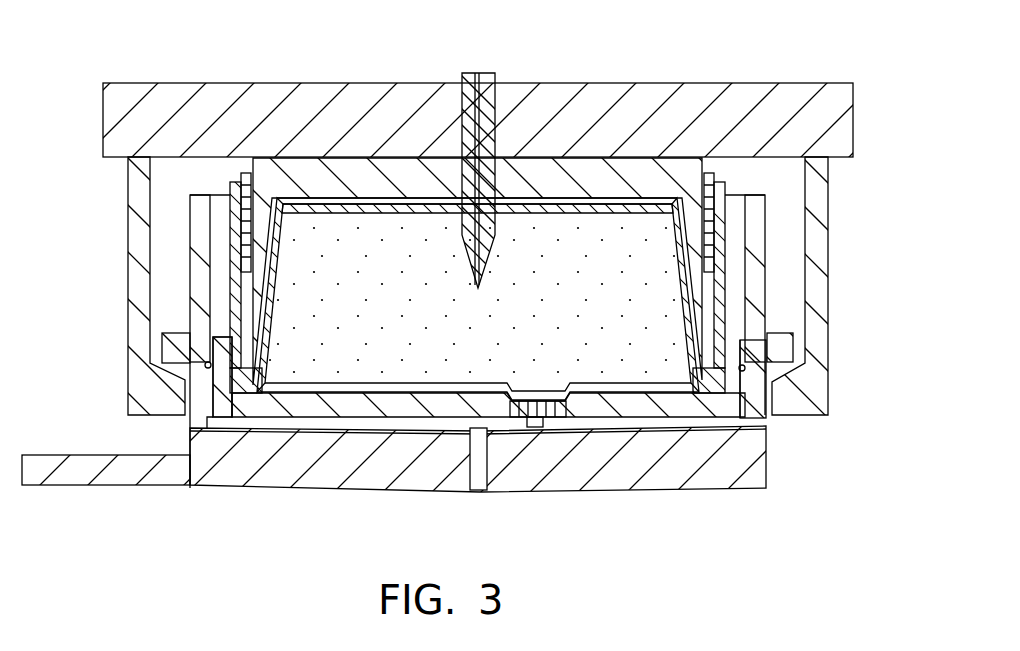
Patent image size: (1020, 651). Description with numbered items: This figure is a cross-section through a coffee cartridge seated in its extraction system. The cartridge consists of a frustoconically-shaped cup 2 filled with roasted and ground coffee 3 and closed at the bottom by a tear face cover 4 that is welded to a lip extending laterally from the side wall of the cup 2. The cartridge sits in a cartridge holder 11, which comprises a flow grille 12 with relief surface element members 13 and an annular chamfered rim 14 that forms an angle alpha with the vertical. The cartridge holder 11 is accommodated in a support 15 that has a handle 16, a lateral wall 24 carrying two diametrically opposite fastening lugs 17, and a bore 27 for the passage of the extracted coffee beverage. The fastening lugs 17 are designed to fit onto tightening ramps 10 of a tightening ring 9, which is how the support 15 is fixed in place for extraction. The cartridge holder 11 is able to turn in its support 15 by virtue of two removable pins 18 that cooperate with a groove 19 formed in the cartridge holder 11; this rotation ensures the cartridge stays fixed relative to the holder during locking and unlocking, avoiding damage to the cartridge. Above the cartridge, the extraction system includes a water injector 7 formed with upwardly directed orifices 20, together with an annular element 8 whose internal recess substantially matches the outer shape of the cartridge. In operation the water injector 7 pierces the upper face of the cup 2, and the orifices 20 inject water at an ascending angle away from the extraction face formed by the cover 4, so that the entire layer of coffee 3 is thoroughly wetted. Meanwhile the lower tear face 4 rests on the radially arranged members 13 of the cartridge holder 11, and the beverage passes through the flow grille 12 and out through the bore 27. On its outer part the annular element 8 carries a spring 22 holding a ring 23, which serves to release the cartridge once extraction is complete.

The cup 2 is at (545, 185).
The roasted and ground coffee 3 is at (452, 326).
The tear face cover 4 is at (385, 383).
The water injector 7 is at (476, 72).
The annular element 8 is at (655, 170).
The tightening ring 9 is at (817, 208).
The tightening ramps 10 is at (797, 413).
The cartridge holder 11 is at (737, 352).
The flow grille 12 is at (533, 422).
The relief surface element members 13 is at (575, 425).
The annular chamfered rim 14 is at (240, 427).
The support 15 is at (665, 470).
The handle 16 is at (52, 475).
The fastening lugs 17 is at (170, 353).
The removable pins 18 is at (206, 367).
The groove 19 is at (744, 372).
The upwardly directed orifices 20 is at (472, 208).
The spring 22 is at (243, 212).
The ring 23 is at (265, 292).
The lateral wall 24 is at (757, 269).
The bore 27 is at (480, 475).